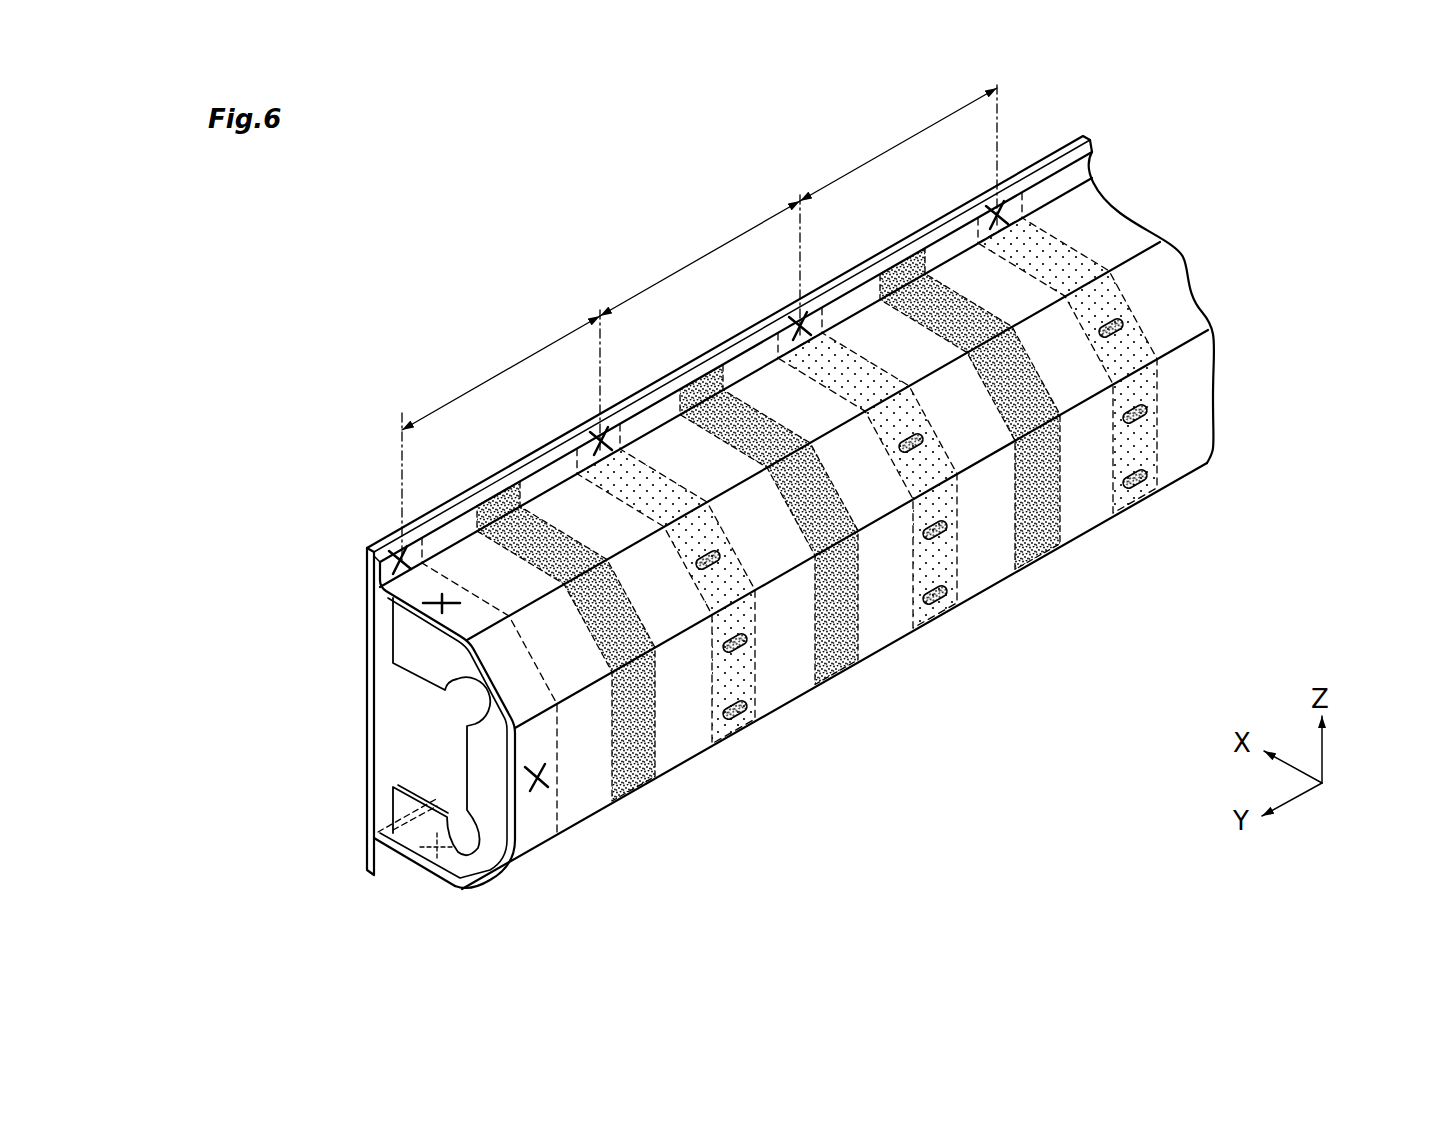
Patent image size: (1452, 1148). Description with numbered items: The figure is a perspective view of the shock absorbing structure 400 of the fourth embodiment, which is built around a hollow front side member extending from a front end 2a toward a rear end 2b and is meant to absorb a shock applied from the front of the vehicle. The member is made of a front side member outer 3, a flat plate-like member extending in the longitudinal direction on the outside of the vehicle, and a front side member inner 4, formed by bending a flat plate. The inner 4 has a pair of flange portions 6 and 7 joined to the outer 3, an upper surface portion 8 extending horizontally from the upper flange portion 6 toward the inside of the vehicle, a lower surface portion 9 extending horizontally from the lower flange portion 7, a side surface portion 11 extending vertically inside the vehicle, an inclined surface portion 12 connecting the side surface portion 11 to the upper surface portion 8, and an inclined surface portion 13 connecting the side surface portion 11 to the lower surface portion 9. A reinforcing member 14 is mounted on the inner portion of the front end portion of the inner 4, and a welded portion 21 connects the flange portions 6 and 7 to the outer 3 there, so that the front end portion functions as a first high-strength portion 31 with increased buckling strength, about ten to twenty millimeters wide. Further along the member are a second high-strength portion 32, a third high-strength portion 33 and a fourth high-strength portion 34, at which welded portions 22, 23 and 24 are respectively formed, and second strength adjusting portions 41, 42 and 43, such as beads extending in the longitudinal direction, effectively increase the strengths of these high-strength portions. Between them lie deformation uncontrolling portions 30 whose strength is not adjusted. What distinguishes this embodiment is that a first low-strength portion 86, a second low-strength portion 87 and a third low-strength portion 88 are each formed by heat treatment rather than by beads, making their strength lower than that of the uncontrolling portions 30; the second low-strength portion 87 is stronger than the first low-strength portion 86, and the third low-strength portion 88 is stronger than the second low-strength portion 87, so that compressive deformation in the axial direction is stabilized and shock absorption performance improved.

The shock absorbing structure 400 is at (538, 198).
The front side member inner 4 is at (1260, 236).
The front side member outer 3 is at (367, 678).
The front end 2a is at (367, 758).
The rear end 2b is at (1205, 308).
The flange portion 6 is at (1094, 160).
The flange portion 7 is at (380, 858).
The upper surface portion 8 is at (1112, 227).
The lower surface portion 9 is at (427, 868).
The side surface portion 11 is at (1190, 382).
The inclined surface portion 12 is at (1167, 266).
The inclined surface portion 13 is at (492, 868).
The reinforcing member 14 is at (478, 763).
The welded portion 21 is at (384, 563).
The welded portion 22 is at (596, 433).
The welded portion 23 is at (793, 321).
The welded portion 24 is at (985, 200).
The deformation uncontrolling portion 30 is at (1069, 213).
The first high-strength portion 31 is at (366, 545).
The second high-strength portion 32 is at (591, 430).
The third high-strength portion 33 is at (790, 318).
The fourth high-strength portion 34 is at (989, 190).
The second strength adjusting portion 41 is at (722, 552).
The second strength adjusting portion 42 is at (919, 432).
The second strength adjusting portion 43 is at (1122, 331).
The first low-strength portion 86 is at (497, 500).
The second low-strength portion 87 is at (704, 384).
The third low-strength portion 88 is at (903, 272).